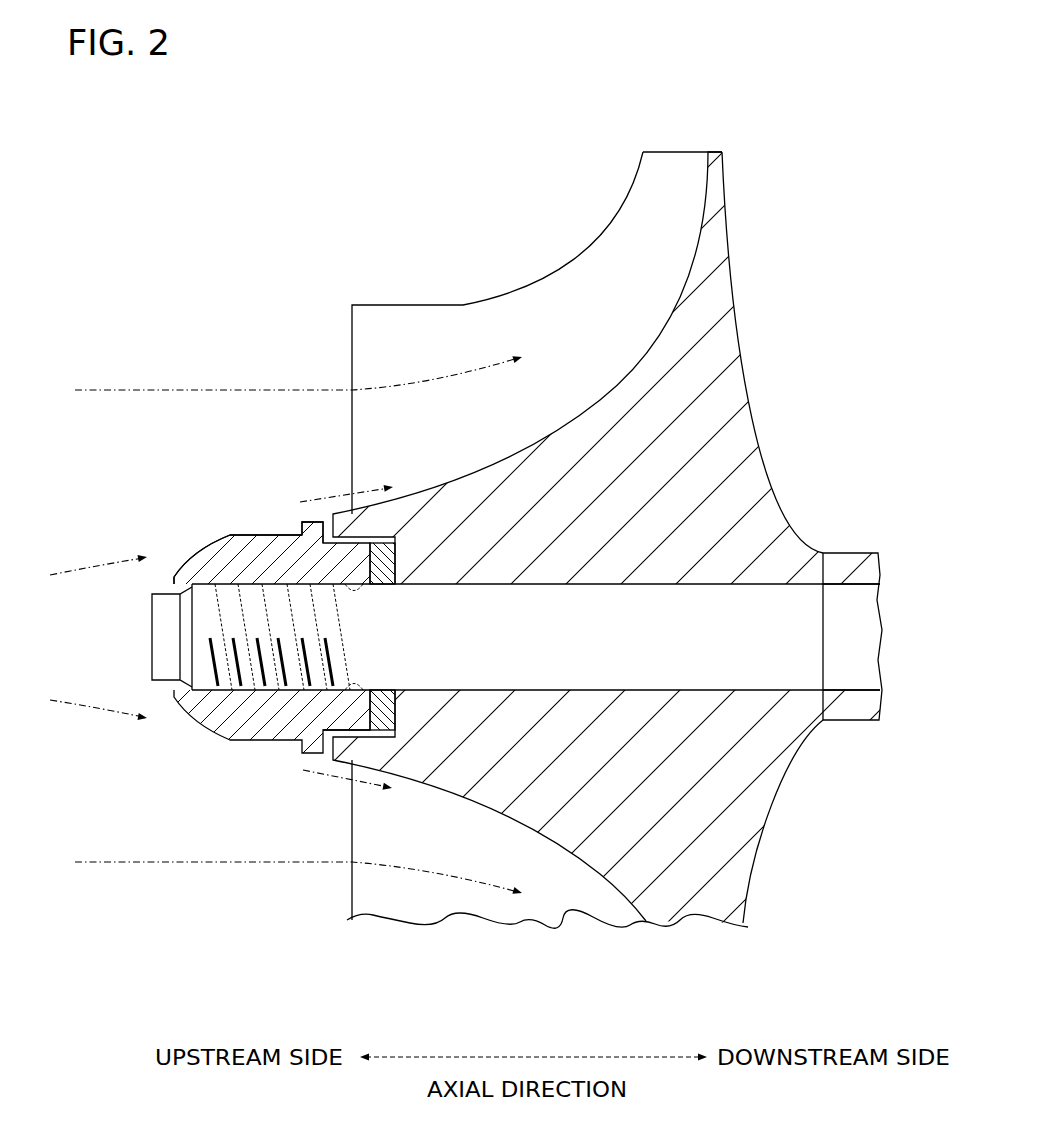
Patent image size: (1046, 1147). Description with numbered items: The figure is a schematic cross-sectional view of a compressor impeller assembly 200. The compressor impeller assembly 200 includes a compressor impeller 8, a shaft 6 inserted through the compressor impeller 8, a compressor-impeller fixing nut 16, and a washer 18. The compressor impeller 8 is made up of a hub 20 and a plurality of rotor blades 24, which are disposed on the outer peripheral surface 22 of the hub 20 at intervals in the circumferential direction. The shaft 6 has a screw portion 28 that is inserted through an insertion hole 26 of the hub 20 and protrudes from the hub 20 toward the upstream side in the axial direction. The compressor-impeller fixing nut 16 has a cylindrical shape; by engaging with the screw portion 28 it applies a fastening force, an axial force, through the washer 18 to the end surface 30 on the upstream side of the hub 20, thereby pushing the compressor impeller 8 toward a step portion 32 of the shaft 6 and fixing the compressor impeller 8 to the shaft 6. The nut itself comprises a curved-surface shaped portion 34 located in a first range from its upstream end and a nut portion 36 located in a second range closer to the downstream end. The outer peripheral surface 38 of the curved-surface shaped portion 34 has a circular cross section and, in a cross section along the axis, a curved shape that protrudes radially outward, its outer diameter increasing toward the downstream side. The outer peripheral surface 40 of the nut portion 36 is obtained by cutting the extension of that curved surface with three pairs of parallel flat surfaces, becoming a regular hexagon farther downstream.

The compressor impeller assembly 200 is at (763, 128).
The rotor blades 24 is at (547, 303).
The outer peripheral surface of the hub 22 is at (611, 388).
The compressor impeller 8 is at (728, 445).
The hub 20 is at (752, 527).
The insertion hole 26 is at (798, 586).
The step portion 32 is at (818, 648).
The shaft 6 is at (748, 657).
The compressor-impeller fixing nut 16 is at (191, 716).
The washer 18 is at (397, 703).
The screw portion 28 is at (272, 665).
The end surface 30 is at (352, 722).
The curved-surface shaped portion 34 is at (210, 550).
The nut portion 36 is at (285, 542).
The outer peripheral surface of the curved-surface shaped portion 38 is at (190, 541).
The outer peripheral surface of the nut portion 40 is at (253, 534).